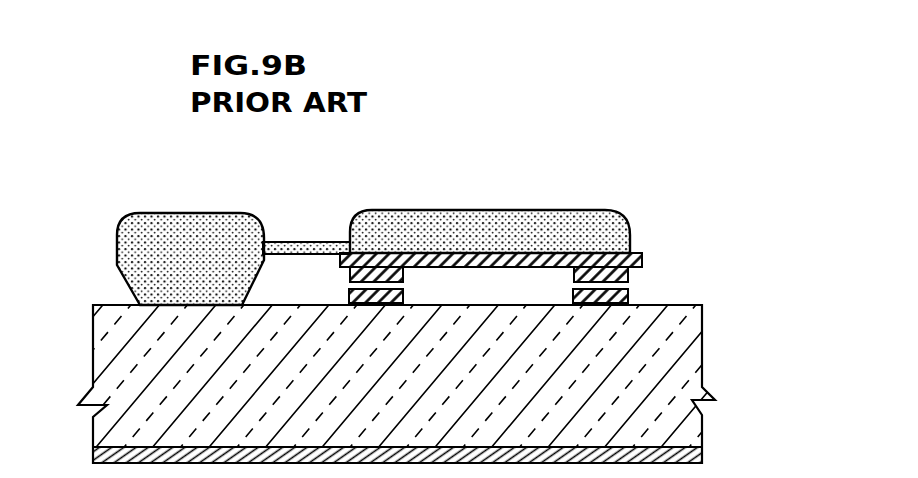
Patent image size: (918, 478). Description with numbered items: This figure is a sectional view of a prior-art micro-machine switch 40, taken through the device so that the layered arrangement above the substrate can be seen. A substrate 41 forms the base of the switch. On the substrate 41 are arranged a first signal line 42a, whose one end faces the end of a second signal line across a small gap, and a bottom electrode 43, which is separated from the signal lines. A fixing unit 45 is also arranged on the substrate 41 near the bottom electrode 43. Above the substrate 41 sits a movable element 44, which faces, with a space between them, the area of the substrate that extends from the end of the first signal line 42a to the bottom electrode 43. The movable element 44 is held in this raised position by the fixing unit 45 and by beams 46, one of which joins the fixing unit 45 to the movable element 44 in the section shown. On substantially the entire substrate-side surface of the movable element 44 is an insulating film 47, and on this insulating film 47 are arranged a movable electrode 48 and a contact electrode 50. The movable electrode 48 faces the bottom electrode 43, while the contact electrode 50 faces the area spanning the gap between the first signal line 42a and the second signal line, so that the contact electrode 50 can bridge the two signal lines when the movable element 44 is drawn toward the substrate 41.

The micro-machine switch 40 is at (640, 158).
The substrate 41 is at (700, 341).
The first signal line 42a is at (630, 292).
The bottom electrode 43 is at (405, 297).
The movable element 44 is at (483, 210).
The fixing unit 45 is at (195, 212).
The beams 46 is at (304, 241).
The insulating film 47 is at (473, 268).
The movable electrode 48 is at (348, 273).
The contact electrode 50 is at (640, 270).